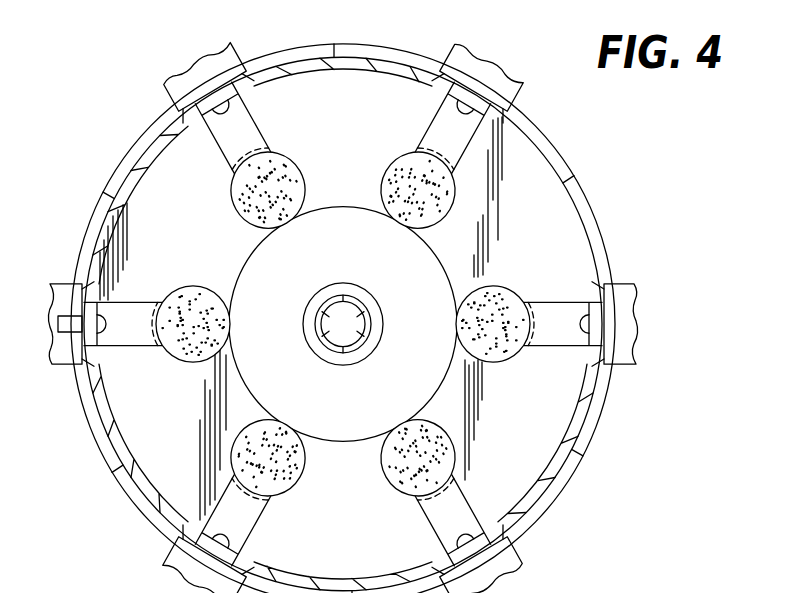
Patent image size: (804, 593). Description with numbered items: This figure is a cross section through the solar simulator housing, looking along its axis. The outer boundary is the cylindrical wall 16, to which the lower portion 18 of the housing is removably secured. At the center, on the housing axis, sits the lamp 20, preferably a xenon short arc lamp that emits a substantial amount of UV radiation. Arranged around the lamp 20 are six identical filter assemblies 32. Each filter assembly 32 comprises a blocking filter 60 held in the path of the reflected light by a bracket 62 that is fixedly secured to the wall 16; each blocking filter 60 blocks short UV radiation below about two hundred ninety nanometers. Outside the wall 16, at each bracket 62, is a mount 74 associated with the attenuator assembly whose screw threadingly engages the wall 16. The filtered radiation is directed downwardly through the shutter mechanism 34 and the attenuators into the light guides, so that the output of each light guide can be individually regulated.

The cylindrical wall 16 is at (588, 250).
The lower portion 18 is at (597, 408).
The lamp 20 is at (353, 315).
The filter assembly 32 is at (356, 297).
The shutter mechanism 34 is at (619, 592).
The blocking filter 60 is at (282, 180).
The bracket 62 is at (245, 128).
The mount 74 is at (228, 56).